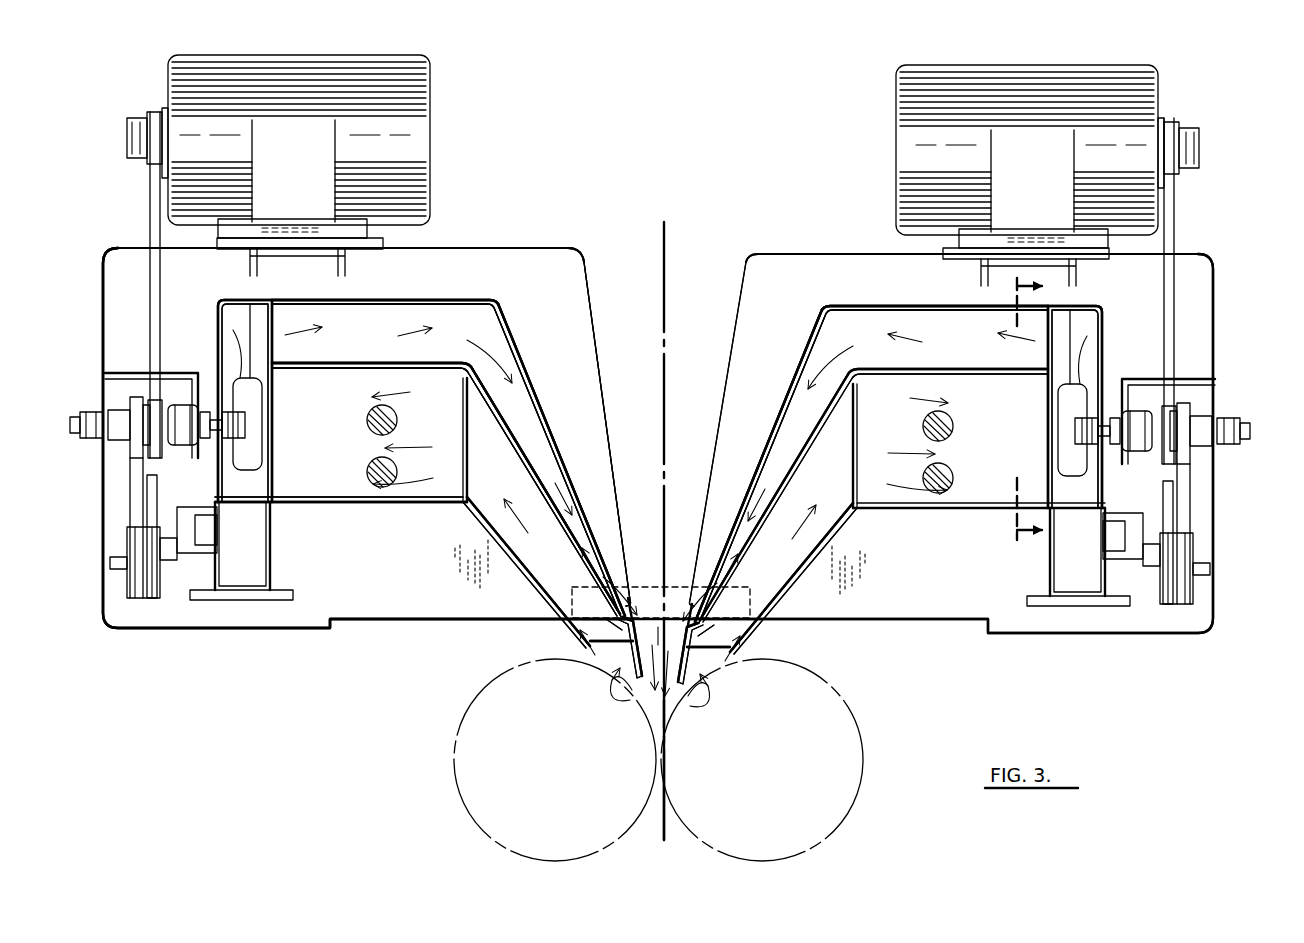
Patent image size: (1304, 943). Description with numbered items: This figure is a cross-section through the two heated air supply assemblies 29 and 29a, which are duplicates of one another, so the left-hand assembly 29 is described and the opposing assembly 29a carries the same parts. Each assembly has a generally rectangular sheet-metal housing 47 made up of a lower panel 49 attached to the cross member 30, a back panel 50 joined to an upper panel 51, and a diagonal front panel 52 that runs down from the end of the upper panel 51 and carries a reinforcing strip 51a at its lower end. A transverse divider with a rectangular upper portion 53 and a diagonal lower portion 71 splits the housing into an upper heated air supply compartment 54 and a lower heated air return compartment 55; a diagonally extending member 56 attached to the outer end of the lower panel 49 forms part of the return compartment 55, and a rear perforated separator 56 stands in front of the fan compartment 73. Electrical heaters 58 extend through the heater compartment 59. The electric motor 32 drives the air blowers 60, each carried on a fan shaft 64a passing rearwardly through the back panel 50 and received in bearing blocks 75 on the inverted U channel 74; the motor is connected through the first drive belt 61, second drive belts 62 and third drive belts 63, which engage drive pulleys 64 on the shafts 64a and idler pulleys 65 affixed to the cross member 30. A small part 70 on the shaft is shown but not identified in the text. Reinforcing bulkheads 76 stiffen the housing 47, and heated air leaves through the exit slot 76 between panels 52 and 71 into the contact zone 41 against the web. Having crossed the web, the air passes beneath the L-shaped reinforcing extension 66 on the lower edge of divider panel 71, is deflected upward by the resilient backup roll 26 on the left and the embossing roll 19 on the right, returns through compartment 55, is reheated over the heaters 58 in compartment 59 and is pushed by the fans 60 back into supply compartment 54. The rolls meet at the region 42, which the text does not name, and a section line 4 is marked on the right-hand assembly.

The heated air supply assembly 29 is at (556, 216).
The opposing heated air supply assembly 29a is at (800, 240).
The electric motor 32 is at (302, 80).
The first drive belt 61 is at (150, 224).
The fan compartment 73 is at (235, 306).
The back panel 50 is at (218, 330).
The air blower 60 is at (244, 378).
The upper panel 51 is at (404, 298).
The housing 47 is at (498, 298).
The reinforcing bulkhead 76 is at (578, 290).
The diagonal front panel 52 is at (533, 380).
The upper portion of divider member 53 is at (398, 364).
The lower portion of divider member 71 is at (494, 408).
The upper heated air supply compartment 54 is at (660, 461).
The heater compartment 59 is at (613, 489).
The lower heated air return compartment 55 is at (660, 564).
The lower panel 49 is at (330, 503).
The cross member 30 is at (270, 568).
The inverted U channel 74 is at (108, 375).
The fan shaft 64a is at (72, 440).
The drive pulley 64 is at (130, 400).
The second drive belt 62 is at (130, 485).
The bearing block 75 is at (180, 408).
The fan shaft nut 70 is at (246, 440).
The third drive belt 63 is at (153, 498).
The idler pulley 65 is at (128, 580).
The electrical heater 58 is at (372, 462).
The perforated separator 56 is at (286, 390).
The reinforcing strip 51a is at (625, 585).
The contact zone 41 is at (669, 625).
The L-shaped reinforcing extension 66 is at (636, 673).
The resilient backup roll 26 is at (430, 768).
The embossing roll 19 is at (880, 725).
The nip 42 is at (668, 756).
The section line 4- 4 is at (1049, 412).